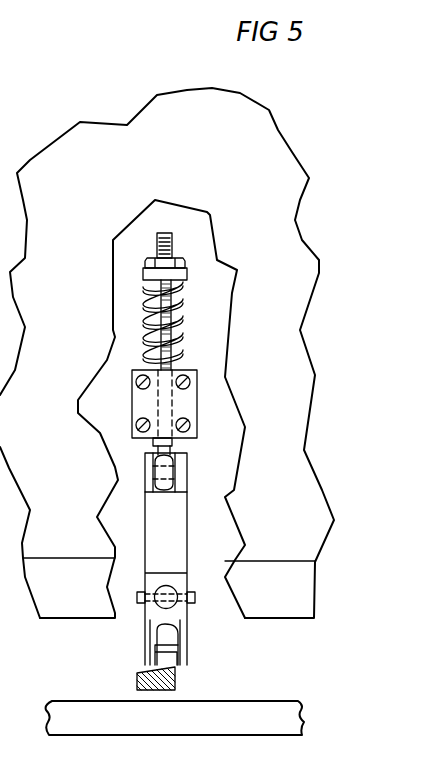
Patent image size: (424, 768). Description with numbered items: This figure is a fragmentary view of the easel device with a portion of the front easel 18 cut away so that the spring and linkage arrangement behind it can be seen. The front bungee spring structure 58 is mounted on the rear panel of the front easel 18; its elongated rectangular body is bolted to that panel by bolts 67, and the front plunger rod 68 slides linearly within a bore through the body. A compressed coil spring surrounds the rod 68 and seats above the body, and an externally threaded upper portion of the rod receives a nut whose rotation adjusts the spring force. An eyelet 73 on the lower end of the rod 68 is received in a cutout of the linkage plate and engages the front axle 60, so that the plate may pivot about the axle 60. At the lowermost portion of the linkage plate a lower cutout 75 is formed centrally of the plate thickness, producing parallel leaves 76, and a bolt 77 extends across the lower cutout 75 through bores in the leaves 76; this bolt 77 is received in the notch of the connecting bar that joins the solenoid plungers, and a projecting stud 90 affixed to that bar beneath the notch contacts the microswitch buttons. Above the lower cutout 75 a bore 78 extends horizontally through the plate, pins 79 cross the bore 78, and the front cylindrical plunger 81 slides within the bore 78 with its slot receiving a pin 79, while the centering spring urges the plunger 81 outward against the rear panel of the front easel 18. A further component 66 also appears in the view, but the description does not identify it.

The front easel 18 is at (211, 256).
The front bungee spring structure 58 is at (118, 381).
The front axle 60 is at (146, 472).
The stem 66 is at (198, 418).
The bolts 67 is at (186, 385).
The front plunger rod 68 is at (165, 233).
The eyelet 73 is at (163, 492).
The lower cutout 75 is at (173, 638).
The parallel leaves 76 is at (147, 657).
The bolt 77 is at (177, 666).
The bore 78 is at (168, 600).
The pins 79 is at (197, 597).
The front cylindrical plunger 81 is at (156, 607).
The projecting stud 90 is at (138, 677).